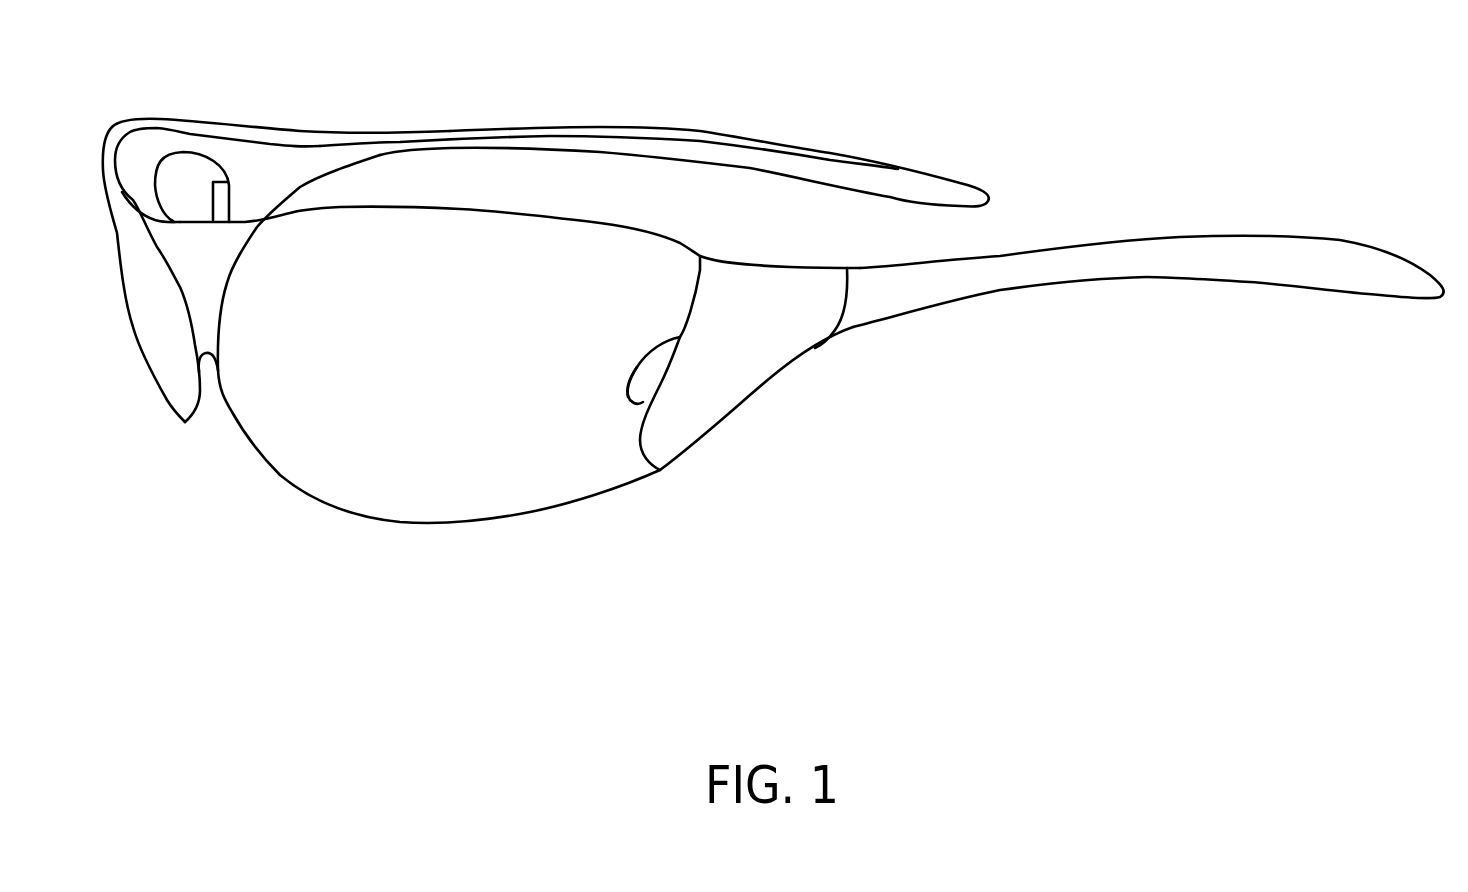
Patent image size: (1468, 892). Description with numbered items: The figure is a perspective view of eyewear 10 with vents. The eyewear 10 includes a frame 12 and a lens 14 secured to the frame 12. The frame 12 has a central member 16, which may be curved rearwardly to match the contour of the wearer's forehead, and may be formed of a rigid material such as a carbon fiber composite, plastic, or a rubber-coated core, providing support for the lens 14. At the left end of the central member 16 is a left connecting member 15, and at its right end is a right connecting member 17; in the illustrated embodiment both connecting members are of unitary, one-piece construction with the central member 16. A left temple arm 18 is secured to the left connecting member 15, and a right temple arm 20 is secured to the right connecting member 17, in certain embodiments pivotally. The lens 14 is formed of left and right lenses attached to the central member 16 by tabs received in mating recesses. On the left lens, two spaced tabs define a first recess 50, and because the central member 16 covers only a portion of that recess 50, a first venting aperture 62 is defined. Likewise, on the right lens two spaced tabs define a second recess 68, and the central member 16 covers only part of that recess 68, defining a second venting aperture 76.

The eyewear 10 is at (1072, 196).
The frame 12 is at (212, 287).
The lens 14 is at (233, 468).
The left connecting member 15 is at (746, 278).
The central member 16 is at (160, 119).
The right connecting member 17 is at (222, 148).
The left temple arm 18 is at (1143, 278).
The right temple arm 20 is at (798, 162).
The first recess 50 is at (668, 350).
The first venting aperture 62 is at (640, 375).
The second recess 68 is at (228, 211).
The second venting aperture 76 is at (221, 190).